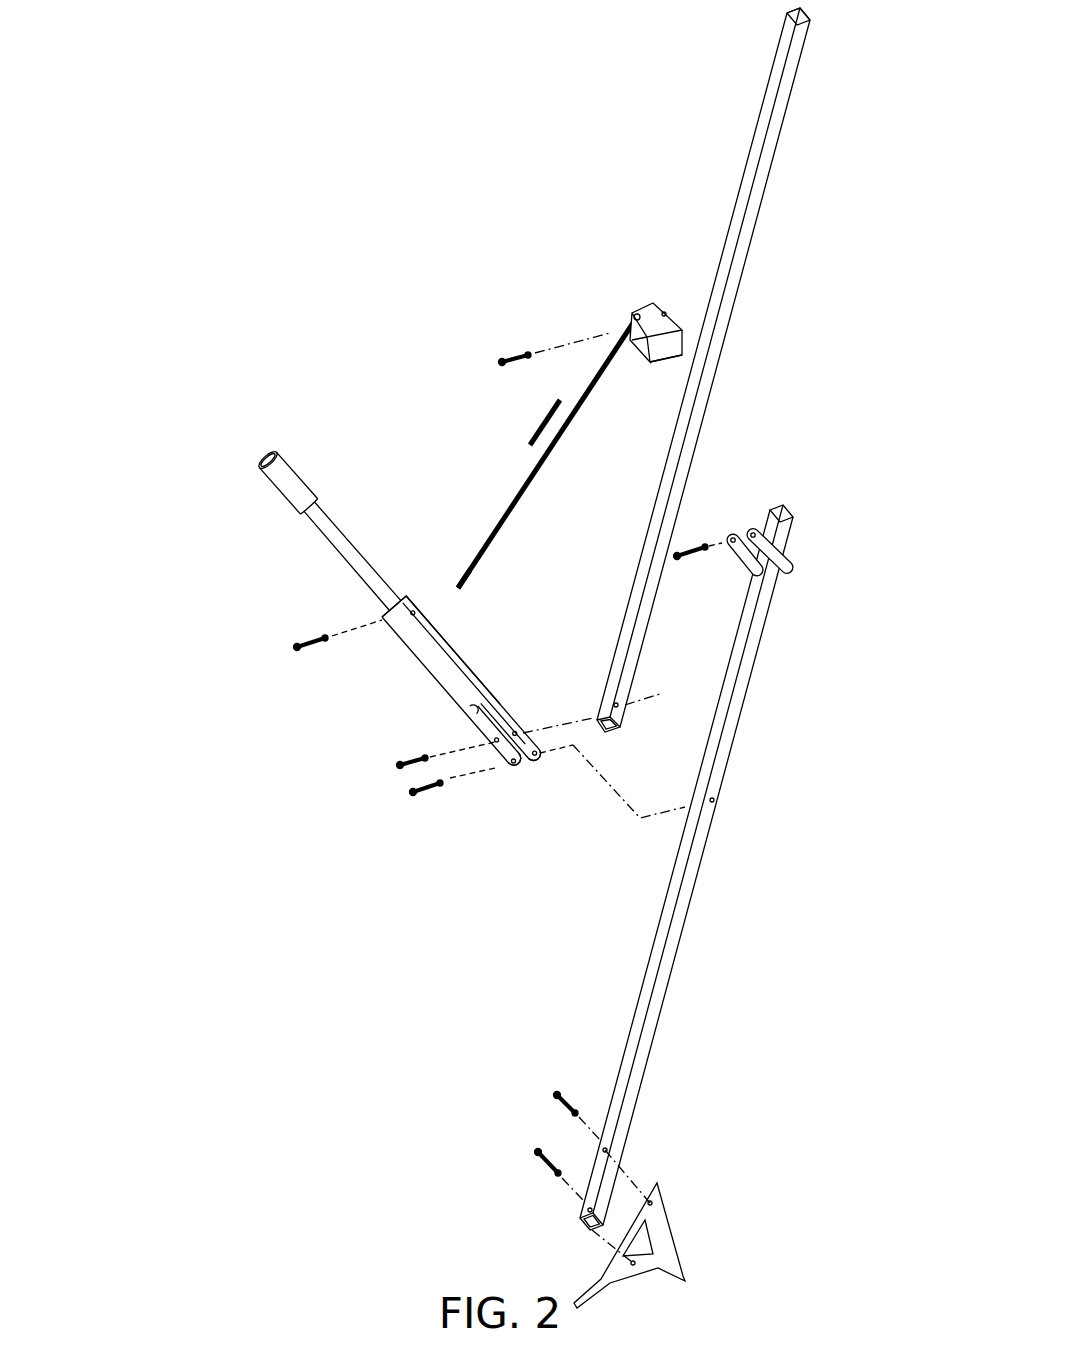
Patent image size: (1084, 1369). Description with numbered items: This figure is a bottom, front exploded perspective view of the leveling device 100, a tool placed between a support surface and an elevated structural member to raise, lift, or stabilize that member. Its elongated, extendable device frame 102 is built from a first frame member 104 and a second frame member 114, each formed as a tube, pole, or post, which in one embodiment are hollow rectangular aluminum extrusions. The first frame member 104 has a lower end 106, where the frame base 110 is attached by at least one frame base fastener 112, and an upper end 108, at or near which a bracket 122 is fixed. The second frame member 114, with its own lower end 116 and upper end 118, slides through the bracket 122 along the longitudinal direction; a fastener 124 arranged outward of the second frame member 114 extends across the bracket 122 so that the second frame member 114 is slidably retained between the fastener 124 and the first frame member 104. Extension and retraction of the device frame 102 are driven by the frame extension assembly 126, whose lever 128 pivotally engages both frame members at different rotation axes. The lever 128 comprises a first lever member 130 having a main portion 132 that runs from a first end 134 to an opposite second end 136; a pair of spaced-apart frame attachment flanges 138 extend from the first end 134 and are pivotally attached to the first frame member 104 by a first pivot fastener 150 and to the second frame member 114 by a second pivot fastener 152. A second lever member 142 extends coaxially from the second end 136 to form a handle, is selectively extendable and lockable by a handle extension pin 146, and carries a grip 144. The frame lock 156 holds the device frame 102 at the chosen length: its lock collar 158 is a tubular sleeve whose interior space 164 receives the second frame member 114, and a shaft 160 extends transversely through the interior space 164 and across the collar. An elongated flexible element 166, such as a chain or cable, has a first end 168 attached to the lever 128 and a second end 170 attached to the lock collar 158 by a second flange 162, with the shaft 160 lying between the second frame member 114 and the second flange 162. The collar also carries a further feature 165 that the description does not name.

The leveling device 100 is at (392, 305).
The device frame 102 is at (823, 445).
The first frame member 104 is at (700, 900).
The lower end 106 is at (583, 1227).
The upper end 108 is at (795, 512).
The frame base 110 is at (678, 1252).
The frame base fastener 112 is at (553, 1093).
The second frame member 114 is at (782, 133).
The lower end 116 is at (613, 733).
The upper end 118 is at (815, 15).
The bracket 122 is at (785, 570).
The fastener 124 is at (700, 540).
The frame extension assembly 126 is at (190, 440).
The lever 128 is at (307, 547).
The first lever member 130 is at (403, 662).
The main portion 132 is at (475, 688).
The first end 134 is at (470, 728).
The second end 136 is at (400, 600).
The frame attachment flanges 138 is at (512, 775).
The second lever member 142 is at (333, 512).
The grip 144 is at (283, 493).
The handle extension pin 146 is at (308, 638).
The first pivot fastener 150 is at (412, 794).
The second pivot fastener 152 is at (398, 770).
The frame lock 156 is at (553, 427).
The lock collar 158 is at (648, 303).
The shaft 160 is at (500, 358).
The second flange 162 is at (633, 311).
The interior space 164 is at (642, 355).
The bottom face 165 is at (657, 363).
The elongated flexible element 166 is at (530, 485).
The first end 168 is at (458, 592).
The second end 170 is at (625, 325).